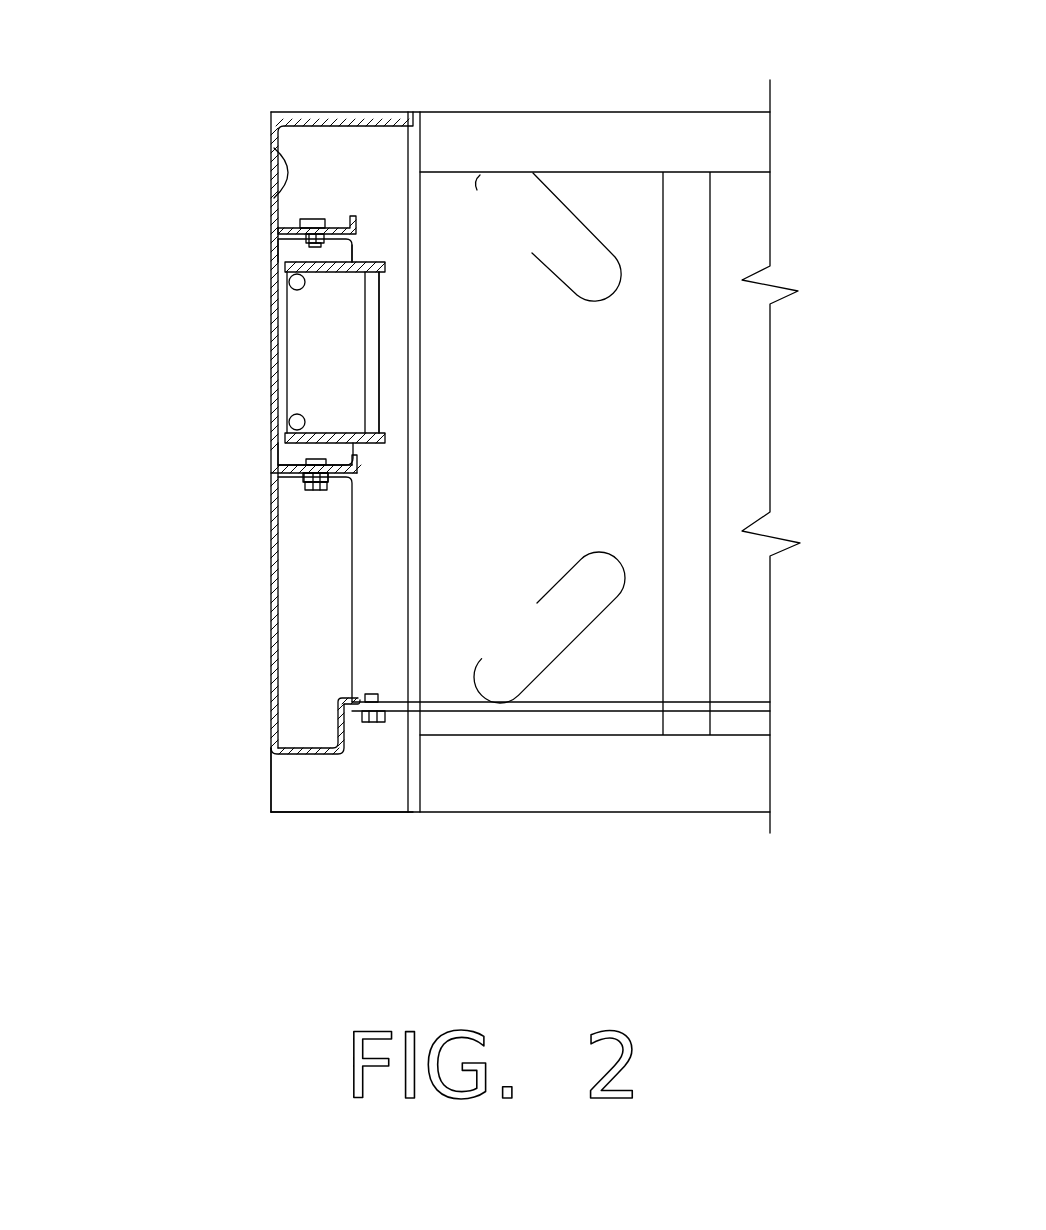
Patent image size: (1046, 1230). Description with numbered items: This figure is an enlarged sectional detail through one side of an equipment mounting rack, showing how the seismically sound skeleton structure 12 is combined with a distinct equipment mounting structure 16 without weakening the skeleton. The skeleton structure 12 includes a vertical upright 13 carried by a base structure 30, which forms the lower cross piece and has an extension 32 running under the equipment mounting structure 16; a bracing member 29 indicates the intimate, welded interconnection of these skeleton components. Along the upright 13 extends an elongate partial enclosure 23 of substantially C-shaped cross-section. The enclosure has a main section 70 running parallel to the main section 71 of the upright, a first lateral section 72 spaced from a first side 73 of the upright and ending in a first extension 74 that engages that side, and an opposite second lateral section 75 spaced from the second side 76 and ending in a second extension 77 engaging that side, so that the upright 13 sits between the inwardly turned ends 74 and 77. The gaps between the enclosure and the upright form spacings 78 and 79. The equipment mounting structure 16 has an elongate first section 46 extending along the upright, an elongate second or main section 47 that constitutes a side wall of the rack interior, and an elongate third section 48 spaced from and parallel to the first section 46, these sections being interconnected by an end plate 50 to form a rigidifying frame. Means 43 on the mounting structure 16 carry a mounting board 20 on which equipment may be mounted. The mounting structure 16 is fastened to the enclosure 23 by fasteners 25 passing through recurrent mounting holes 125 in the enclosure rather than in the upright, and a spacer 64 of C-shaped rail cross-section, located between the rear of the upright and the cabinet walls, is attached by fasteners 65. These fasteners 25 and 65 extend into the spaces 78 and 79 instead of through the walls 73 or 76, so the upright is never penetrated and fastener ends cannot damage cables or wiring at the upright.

The seismically sound skeleton structure 12 is at (452, 724).
The vertical upright 13 is at (405, 419).
The equipment mounting structure 16 is at (256, 713).
The mounting board 20 is at (748, 707).
The elongate partial enclosure 23 is at (253, 239).
The fastener 25 is at (330, 488).
The bracing member 29 is at (375, 305).
The base structure 30 is at (637, 812).
The extension 32 is at (293, 782).
The means for mounting equipment 43 is at (380, 696).
The first section 46 is at (298, 490).
The second section 47 is at (270, 650).
The third section 48 is at (322, 752).
The end plate 50 is at (313, 595).
The spacer 64 is at (270, 135).
The fastener 65 is at (317, 221).
The main section 70 is at (270, 435).
The main section 71 is at (385, 268).
The first lateral section 72 is at (286, 264).
The first side 73 is at (372, 262).
The first extension 74 is at (350, 252).
The second lateral section 75 is at (293, 421).
The second side 76 is at (325, 435).
The second extension 77 is at (355, 453).
The spacing 78 is at (274, 224).
The spacing 79 is at (275, 457).
The recurrent mounting hole 125 is at (290, 467).